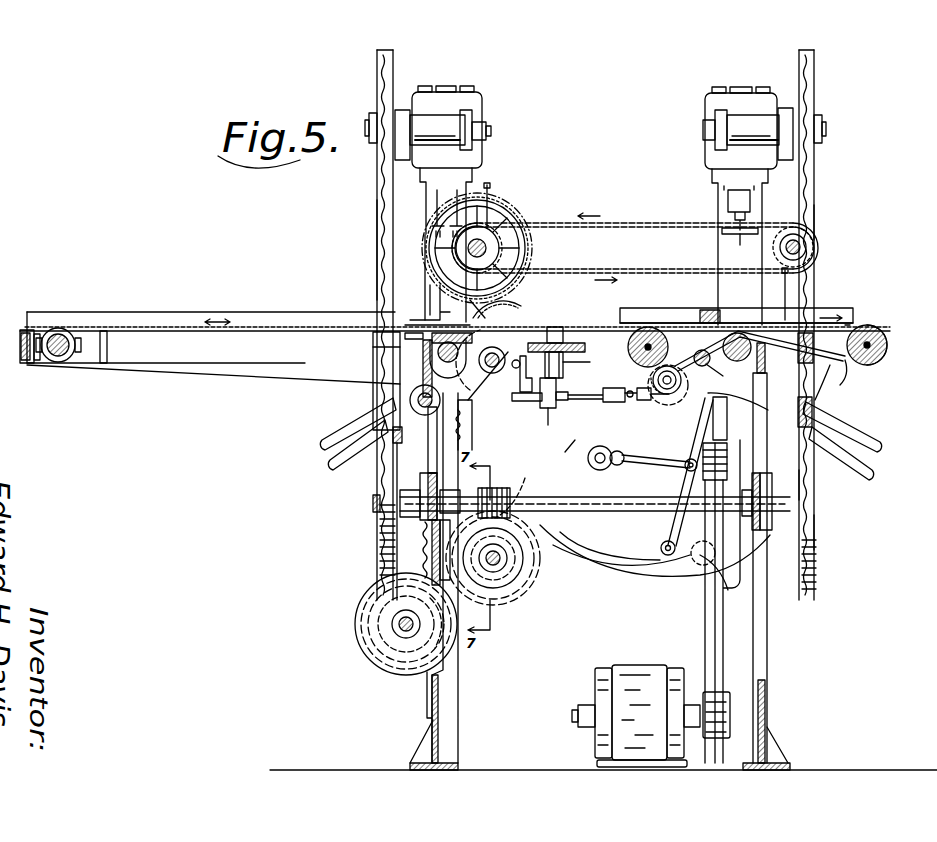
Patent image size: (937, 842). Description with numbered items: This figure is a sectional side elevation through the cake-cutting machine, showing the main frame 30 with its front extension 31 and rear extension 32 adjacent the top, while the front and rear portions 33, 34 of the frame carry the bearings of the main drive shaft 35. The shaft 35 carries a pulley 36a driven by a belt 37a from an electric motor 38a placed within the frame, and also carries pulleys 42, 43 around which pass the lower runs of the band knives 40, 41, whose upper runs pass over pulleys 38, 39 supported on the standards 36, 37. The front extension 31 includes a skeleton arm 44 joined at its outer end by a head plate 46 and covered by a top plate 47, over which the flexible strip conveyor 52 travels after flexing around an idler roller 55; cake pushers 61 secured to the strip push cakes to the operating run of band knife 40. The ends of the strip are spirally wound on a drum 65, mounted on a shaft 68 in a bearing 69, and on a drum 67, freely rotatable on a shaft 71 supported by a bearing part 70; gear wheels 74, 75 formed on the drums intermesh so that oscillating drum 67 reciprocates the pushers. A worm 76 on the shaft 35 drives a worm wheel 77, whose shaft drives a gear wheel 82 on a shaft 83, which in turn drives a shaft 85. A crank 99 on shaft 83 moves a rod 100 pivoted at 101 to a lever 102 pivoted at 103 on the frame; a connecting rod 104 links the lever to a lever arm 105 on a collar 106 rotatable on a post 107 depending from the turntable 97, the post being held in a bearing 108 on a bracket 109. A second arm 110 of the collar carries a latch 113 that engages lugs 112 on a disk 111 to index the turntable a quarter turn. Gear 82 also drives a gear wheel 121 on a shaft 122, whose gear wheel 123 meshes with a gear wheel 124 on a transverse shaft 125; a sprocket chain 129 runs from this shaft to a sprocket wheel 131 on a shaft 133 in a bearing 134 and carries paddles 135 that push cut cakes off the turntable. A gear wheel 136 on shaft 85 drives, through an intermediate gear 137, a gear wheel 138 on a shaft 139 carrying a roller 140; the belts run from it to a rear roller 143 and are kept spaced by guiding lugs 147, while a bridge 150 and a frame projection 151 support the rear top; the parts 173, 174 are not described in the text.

The main frame 30 is at (762, 616).
The front extension 31 is at (288, 374).
The rear extension 32 is at (855, 379).
The front portion of main frame 33 is at (428, 475).
The rear portion of main frame 34 is at (760, 478).
The main drive shaft 35 is at (595, 510).
The standard 36 is at (470, 182).
The pulley 36a is at (723, 443).
The standard 37 is at (716, 196).
The belt 37a is at (713, 616).
The pulley 38 is at (377, 74).
The electric motor 38a is at (640, 668).
The pulley 39 is at (799, 72).
The band knife 40 is at (377, 246).
The band knife 41 is at (816, 222).
The pulley 42 is at (378, 484).
The pulley 43 is at (814, 486).
The arm 44 is at (211, 337).
The head plate 46 is at (22, 360).
The top plate 47 is at (275, 333).
The strip conveyor 52 is at (155, 333).
The idler roller 55 is at (62, 362).
The cake pusher 61 is at (440, 303).
The drum 65 is at (355, 626).
The drum 67 is at (493, 620).
The shaft 68 is at (400, 632).
The bearing 69 is at (440, 690).
The bearing part 70 is at (409, 621).
The shaft 71 is at (500, 565).
The gear wheel 74 is at (427, 572).
The gear wheel 75 is at (432, 545).
The worm 76 is at (505, 496).
The worm wheel 77 is at (540, 508).
The gear wheel 82 is at (612, 572).
The shaft 83 is at (600, 452).
The shaft 85 is at (712, 370).
The turntable 97 is at (558, 327).
The crank 99 is at (622, 456).
The rod 100 is at (668, 462).
The pivot 101 is at (684, 470).
The lever 102 is at (706, 433).
The pivot 103 is at (668, 556).
The connecting rod 104 is at (612, 404).
The lever arm 105 is at (566, 404).
The collar 106 is at (539, 406).
The post 107 is at (566, 452).
The bearing 108 is at (585, 362).
The bracket 109 is at (586, 348).
The arm 110 is at (522, 412).
The disk 111 is at (586, 395).
The lug 112 is at (569, 366).
The latch 113 is at (529, 374).
The gear wheel 121 is at (480, 381).
The shaft 122 is at (494, 370).
The gear wheel 123 is at (515, 306).
The gear wheel 124 is at (512, 216).
The shaft 125 is at (500, 248).
The sprocket chain 129 is at (632, 220).
The sprocket wheel 131 is at (768, 250).
The shaft 133 is at (815, 248).
The bearing 134 is at (795, 306).
The conveying paddle 135 is at (489, 198).
The gear wheel 136 is at (770, 412).
The intermediate gear 137 is at (668, 396).
The gear wheel 138 is at (645, 328).
The shaft 139 is at (670, 338).
The roller 140 is at (658, 332).
The roller 143 is at (882, 360).
The guiding lug 147 is at (846, 392).
The bridge 150 is at (736, 315).
The projection 151 is at (736, 315).
The arm 173 is at (332, 458).
The arm 174 is at (335, 418).